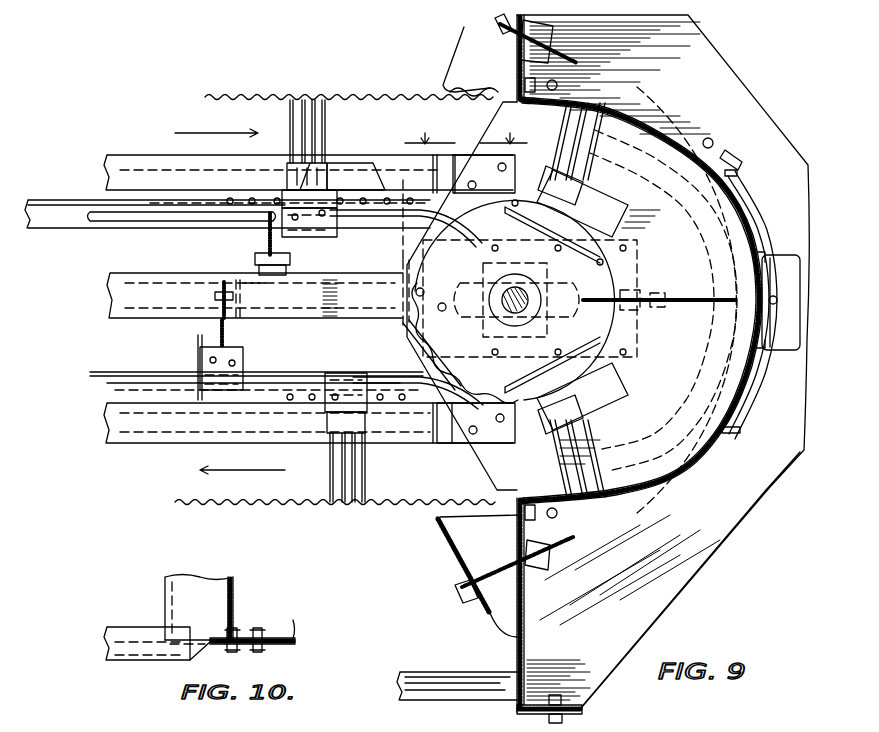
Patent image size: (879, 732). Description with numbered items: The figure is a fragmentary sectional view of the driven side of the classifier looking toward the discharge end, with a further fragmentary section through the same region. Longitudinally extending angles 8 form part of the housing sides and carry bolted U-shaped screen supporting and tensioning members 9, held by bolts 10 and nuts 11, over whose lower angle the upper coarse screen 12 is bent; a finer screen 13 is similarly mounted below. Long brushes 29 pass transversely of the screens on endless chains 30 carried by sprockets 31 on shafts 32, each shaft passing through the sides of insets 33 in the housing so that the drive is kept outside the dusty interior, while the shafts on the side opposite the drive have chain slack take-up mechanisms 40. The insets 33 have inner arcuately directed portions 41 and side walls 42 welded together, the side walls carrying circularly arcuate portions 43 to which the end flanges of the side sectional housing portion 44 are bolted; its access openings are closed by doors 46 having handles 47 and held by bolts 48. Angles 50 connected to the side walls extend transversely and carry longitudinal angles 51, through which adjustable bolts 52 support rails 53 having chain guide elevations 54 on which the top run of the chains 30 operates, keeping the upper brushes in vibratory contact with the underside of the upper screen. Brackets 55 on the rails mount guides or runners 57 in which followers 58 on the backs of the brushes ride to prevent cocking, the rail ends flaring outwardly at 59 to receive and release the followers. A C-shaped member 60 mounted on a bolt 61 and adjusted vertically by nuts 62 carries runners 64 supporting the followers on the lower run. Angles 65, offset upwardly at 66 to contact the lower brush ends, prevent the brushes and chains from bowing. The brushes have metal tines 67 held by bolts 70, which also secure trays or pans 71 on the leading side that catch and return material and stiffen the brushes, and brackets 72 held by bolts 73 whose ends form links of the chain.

In FIG. 9, the longitudinally extending angle 8 is at (505, 66).
In FIG. 9, the U-shaped screen supporting and tensioning member 9 is at (463, 38).
In FIG. 9, the bolt 10 is at (510, 30).
In FIG. 9, the nut 11 is at (570, 45).
In FIG. 9, the upper coarse screen 12 is at (350, 95).
In FIG. 9, the screen 13 is at (318, 505).
In FIG. 9, the brush 29 is at (290, 178).
In FIG. 9, the endless chain 30 is at (238, 208).
In FIG. 9, the sprocket 31 is at (537, 407).
In FIG. 9, the shaft 32 is at (512, 312).
In FIG. 9, the inset 33 is at (480, 453).
In FIG. 9, the chain slack take-up mechanism 40 is at (640, 285).
In FIG. 9, the inner arcuately directed portion 41 is at (400, 333).
In FIG. 10, the inner arcuately directed portion 41 is at (235, 597).
In FIG. 9, the side wall 42 is at (731, 301).
In FIG. 10, the side wall 42 is at (272, 635).
In FIG. 9, the circularly arcuate portion 43 is at (695, 115).
In FIG. 9, the side sectional housing portion 44 is at (605, 482).
In FIG. 9, the door 46 is at (742, 190).
In FIG. 9, the handle 47 is at (783, 245).
In FIG. 9, the bolt 48 is at (722, 160).
In FIG. 9, the angle 50 is at (300, 305).
In FIG. 9, the angle 51 is at (262, 303).
In FIG. 9, the adjustable bolt 52 is at (262, 247).
In FIG. 9, the rail 53 is at (85, 222).
In FIG. 9, the chain guide elevation 54 is at (50, 205).
In FIG. 9, the bracket 55 is at (318, 237).
In FIG. 9, the guide or runner 57 is at (175, 222).
In FIG. 9, the follower 58 is at (605, 237).
In FIG. 9, the flared end 59 is at (455, 228).
In FIG. 9, the C shaped member 60 is at (225, 393).
In FIG. 9, the bolt 61 is at (218, 330).
In FIG. 9, the nut 62 is at (218, 303).
In FIG. 9, the guide or runner 64 is at (130, 372).
In FIG. 9, the angle 65 is at (165, 168).
In FIG. 10, the angle 65 is at (143, 662).
In FIG. 9, the offset 66 is at (450, 175).
In FIG. 10, the offset 66 is at (203, 648).
In FIG. 9, the metal tine 67 is at (625, 420).
In FIG. 9, the bolt 70 is at (290, 170).
In FIG. 9, the tray or pan 71 is at (598, 205).
In FIG. 9, the bracket 72 is at (338, 167).
In FIG. 9, the bolt 73 is at (308, 163).